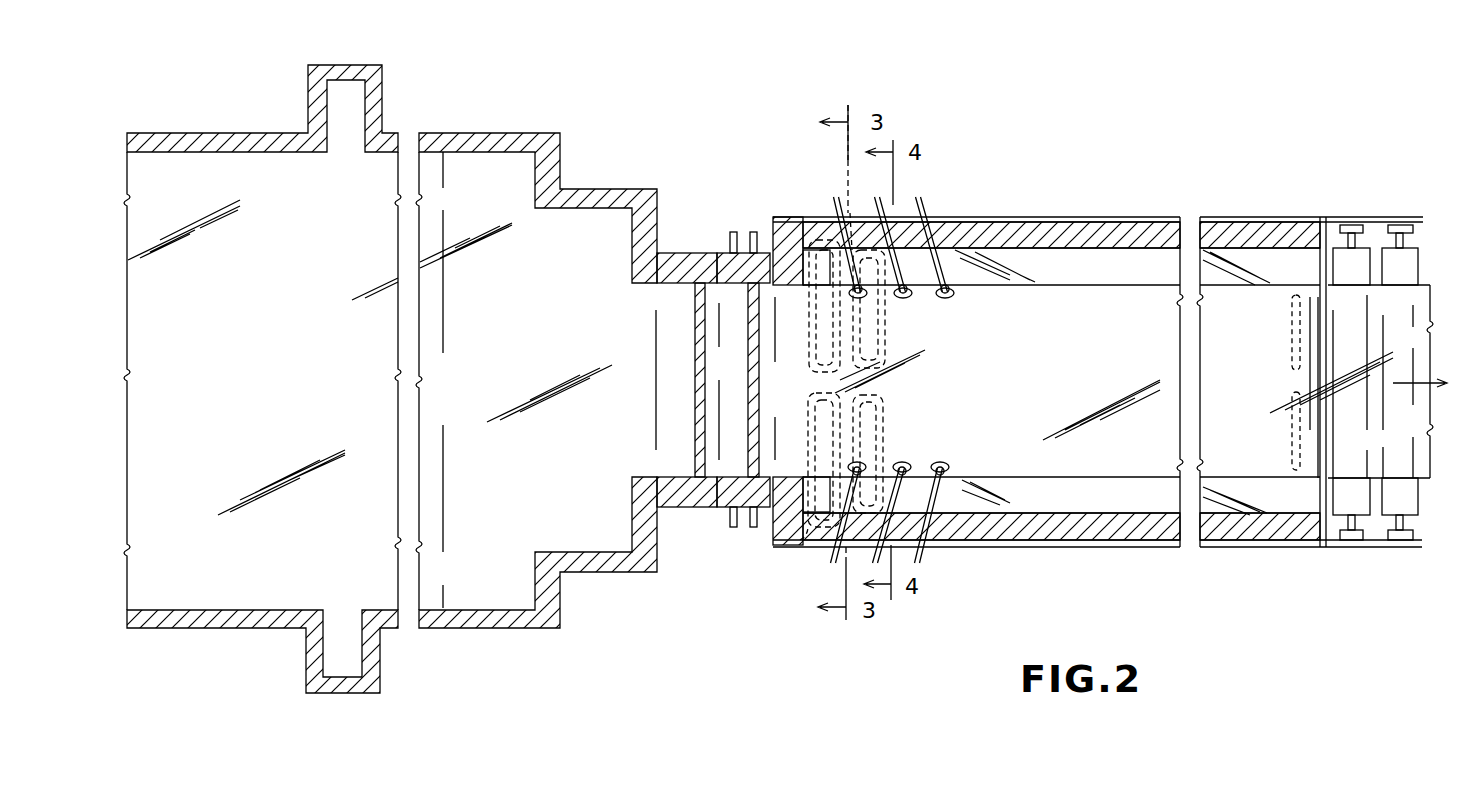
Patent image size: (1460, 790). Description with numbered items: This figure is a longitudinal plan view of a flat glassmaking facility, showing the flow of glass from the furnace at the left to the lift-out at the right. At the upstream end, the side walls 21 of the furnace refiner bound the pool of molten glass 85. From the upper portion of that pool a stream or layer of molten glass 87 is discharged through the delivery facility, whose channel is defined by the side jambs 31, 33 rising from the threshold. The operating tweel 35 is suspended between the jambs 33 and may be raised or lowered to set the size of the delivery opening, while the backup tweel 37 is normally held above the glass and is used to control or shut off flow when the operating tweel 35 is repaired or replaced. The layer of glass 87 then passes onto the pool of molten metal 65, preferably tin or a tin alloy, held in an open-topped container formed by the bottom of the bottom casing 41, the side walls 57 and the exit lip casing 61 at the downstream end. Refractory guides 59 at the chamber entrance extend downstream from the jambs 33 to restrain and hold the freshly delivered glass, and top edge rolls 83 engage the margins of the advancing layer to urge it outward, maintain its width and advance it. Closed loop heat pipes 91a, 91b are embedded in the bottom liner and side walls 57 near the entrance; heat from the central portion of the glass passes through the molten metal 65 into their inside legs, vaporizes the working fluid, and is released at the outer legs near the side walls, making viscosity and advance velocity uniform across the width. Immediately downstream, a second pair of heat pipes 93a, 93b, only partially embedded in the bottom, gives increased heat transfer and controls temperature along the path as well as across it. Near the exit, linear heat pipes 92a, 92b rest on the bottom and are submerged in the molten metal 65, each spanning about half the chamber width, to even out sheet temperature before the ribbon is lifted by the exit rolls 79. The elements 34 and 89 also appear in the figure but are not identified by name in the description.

The side walls 21 is at (477, 130).
The side jamb 31 is at (663, 270).
The side jamb 33 is at (726, 262).
The lead-in pins (lower) 34 is at (733, 528).
The operating tweel 35 is at (758, 293).
The backup tweel 37 is at (693, 384).
The bottom casing 41 is at (1160, 219).
The side walls 57 is at (1114, 231).
The refractory guides 59 is at (802, 222).
The exit lip casing 61 is at (1323, 258).
The pool of molten metal 65 is at (1112, 503).
The exit rolls 79 is at (1416, 266).
The top edge rolls 83 is at (940, 267).
The pool of molten glass 85 is at (266, 377).
The layer of molten glass 87 is at (798, 401).
The chamber 89 is at (1274, 383).
The closed loop heat pipe 91a is at (800, 540).
The closed loop heat pipe 91b is at (850, 213).
The linear heat pipe 92a is at (1292, 455).
The linear heat pipe 92b is at (1292, 308).
The heat pipe 93a is at (884, 436).
The heat pipe 93b is at (886, 330).